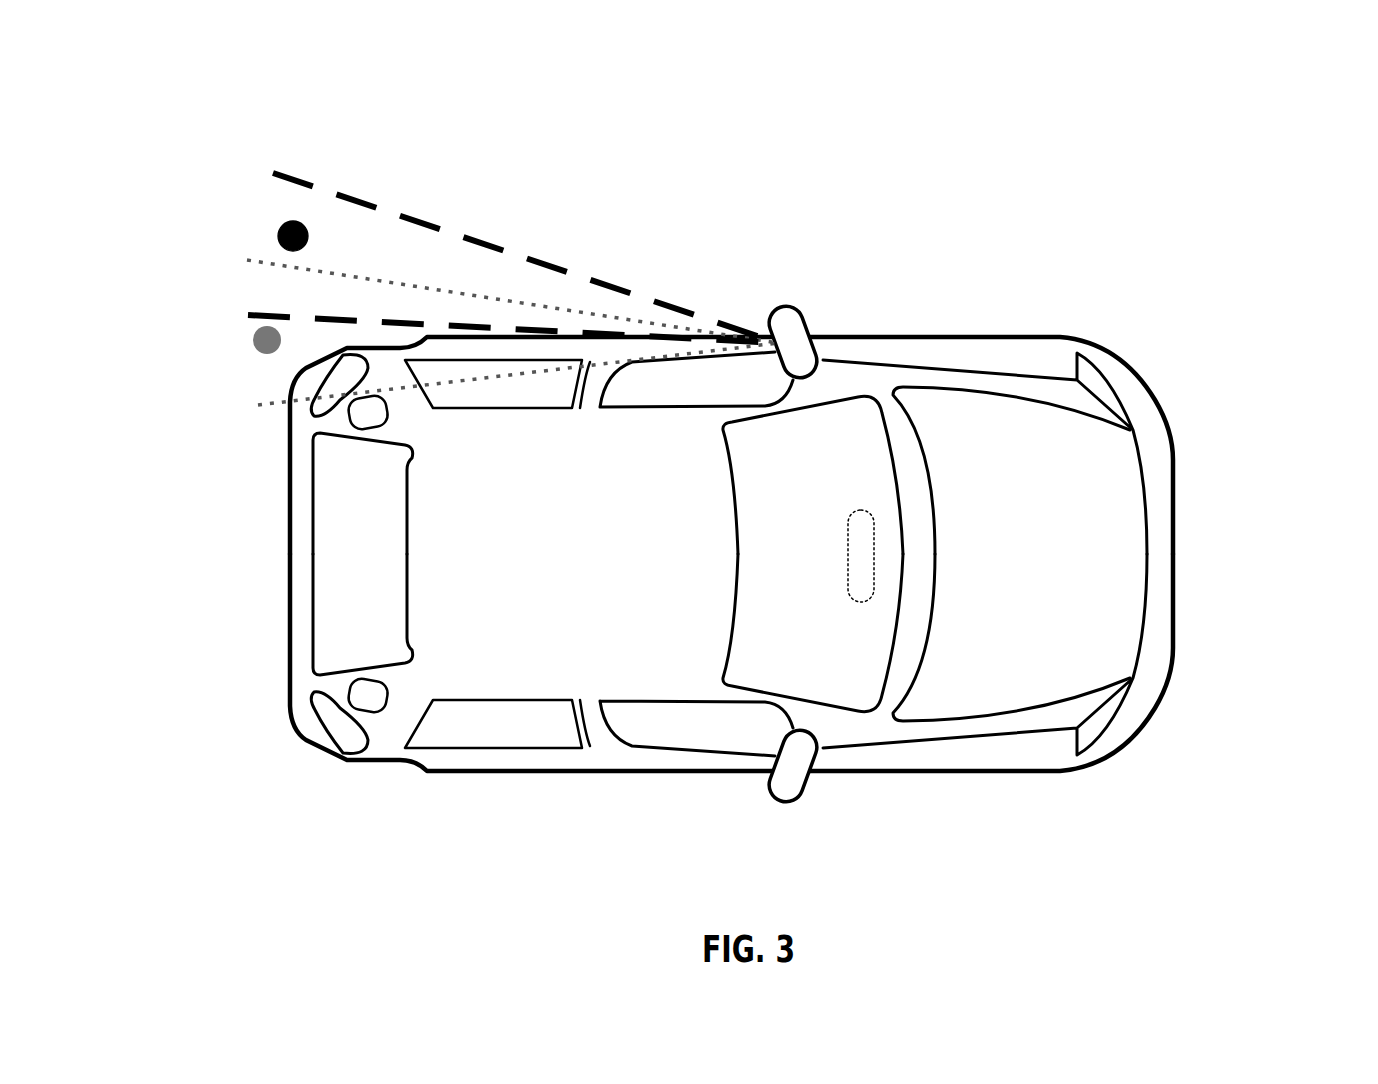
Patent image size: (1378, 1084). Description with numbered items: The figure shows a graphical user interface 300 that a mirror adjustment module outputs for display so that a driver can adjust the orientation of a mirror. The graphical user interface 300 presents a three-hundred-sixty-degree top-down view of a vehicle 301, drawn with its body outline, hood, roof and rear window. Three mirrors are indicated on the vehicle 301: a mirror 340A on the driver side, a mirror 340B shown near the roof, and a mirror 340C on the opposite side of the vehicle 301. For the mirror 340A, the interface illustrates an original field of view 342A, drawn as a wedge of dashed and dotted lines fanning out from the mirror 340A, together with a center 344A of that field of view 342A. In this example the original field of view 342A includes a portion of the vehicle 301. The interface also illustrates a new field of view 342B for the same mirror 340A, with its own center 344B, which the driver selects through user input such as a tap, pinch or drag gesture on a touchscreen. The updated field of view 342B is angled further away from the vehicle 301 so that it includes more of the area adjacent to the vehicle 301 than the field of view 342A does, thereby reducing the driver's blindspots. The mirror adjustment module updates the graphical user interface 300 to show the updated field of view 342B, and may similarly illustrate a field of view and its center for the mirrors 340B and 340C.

The graphical user interface 300 is at (1275, 82).
The vehicle 301 is at (1157, 393).
The mirror 340A is at (793, 312).
The mirror 340B is at (861, 510).
The mirror 340C is at (794, 790).
The field of view 342A is at (202, 283).
The new field of view 342B is at (262, 178).
The center of field of view 344A is at (256, 349).
The center of field of view 344B is at (298, 222).